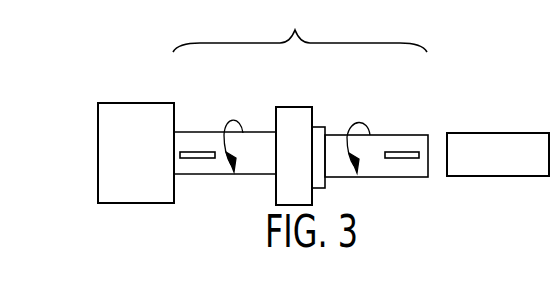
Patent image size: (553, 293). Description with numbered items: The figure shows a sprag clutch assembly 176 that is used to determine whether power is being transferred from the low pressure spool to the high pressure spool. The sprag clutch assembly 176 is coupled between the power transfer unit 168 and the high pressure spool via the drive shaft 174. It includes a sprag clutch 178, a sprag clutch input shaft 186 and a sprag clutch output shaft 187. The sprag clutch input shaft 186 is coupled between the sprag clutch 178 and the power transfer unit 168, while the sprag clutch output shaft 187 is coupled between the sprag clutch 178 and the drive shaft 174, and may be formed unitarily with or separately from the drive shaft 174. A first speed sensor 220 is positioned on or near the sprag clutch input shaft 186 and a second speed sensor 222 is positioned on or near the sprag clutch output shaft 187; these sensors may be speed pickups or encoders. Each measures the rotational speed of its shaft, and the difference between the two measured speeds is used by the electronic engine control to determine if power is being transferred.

The sprag clutch assembly 176 is at (300, 26).
The power transfer unit 168 is at (146, 163).
The sprag clutch input shaft 186 is at (198, 131).
The first speed sensor 220 is at (197, 158).
The sprag clutch 178 is at (294, 107).
The sprag clutch output shaft 187 is at (397, 134).
The second speed sensor 222 is at (403, 158).
The drive shaft 174 is at (500, 132).